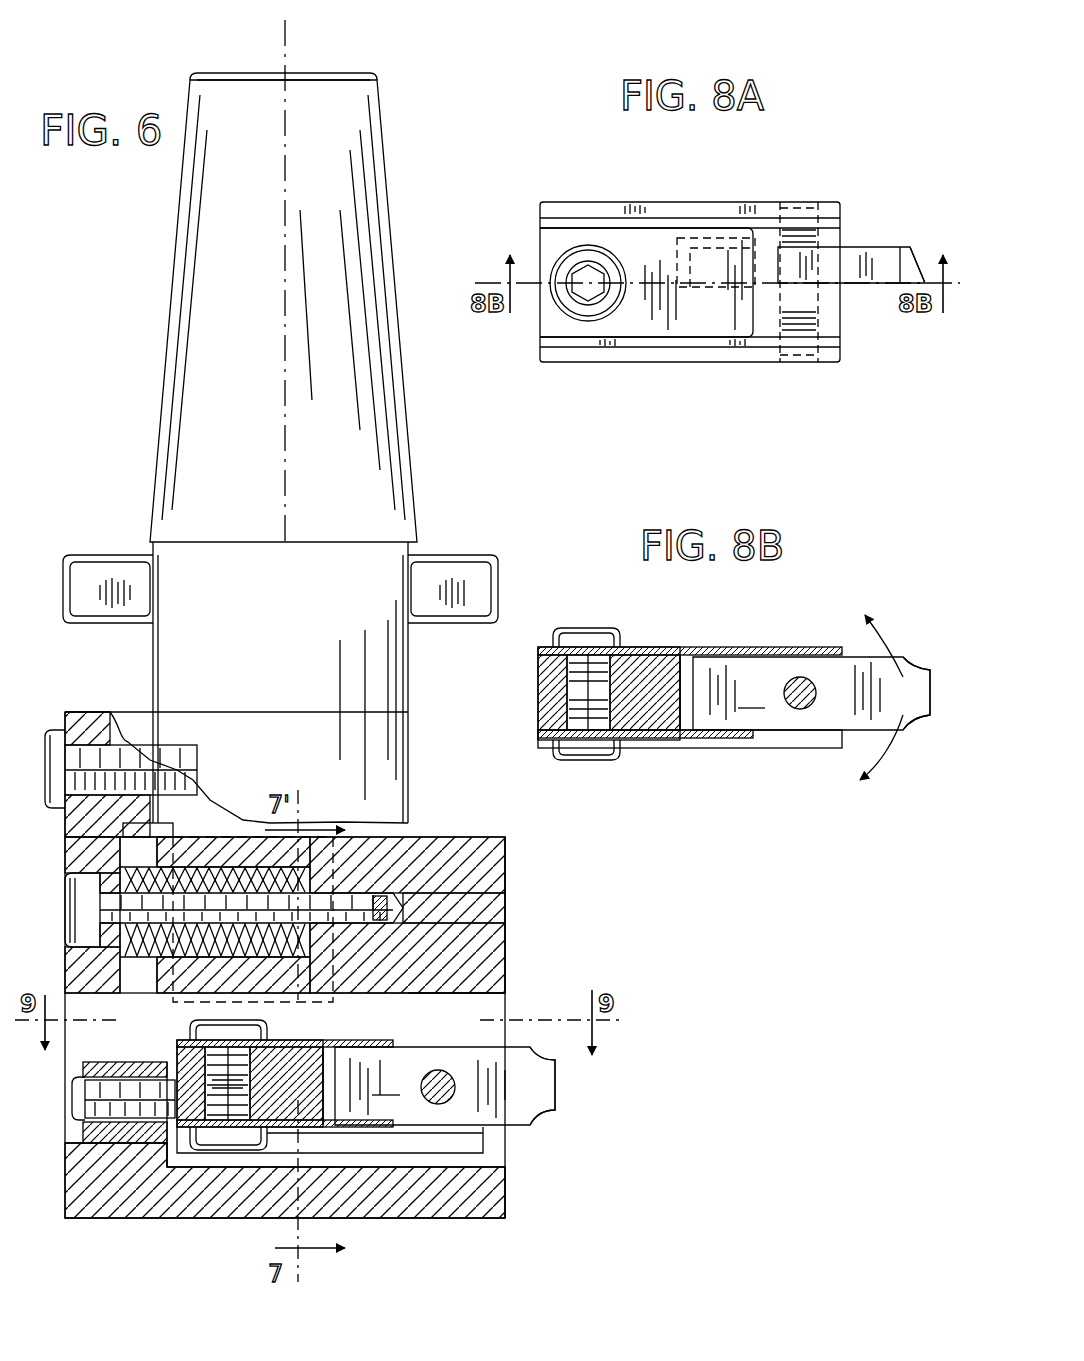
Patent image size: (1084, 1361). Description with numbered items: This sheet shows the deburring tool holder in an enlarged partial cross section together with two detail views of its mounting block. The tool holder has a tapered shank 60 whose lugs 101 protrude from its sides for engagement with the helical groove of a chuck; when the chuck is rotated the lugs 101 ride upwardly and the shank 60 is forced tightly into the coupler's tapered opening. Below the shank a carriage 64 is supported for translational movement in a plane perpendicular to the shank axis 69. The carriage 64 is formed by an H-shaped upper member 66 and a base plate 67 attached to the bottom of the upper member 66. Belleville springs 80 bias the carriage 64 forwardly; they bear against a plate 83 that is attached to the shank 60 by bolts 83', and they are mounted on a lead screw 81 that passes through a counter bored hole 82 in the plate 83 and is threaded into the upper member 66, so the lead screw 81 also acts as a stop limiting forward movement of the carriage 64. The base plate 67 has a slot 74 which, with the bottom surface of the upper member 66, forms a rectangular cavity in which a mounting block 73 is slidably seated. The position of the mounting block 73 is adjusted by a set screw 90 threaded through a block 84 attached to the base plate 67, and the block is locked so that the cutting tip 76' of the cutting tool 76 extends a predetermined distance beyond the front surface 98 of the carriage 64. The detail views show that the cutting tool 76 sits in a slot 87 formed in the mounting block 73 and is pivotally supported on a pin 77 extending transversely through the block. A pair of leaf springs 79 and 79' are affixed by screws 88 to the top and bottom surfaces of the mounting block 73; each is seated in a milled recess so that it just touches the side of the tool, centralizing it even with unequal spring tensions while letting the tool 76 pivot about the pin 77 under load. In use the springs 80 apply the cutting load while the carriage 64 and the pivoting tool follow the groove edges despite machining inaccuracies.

In FIG. 6, the tapered shank 60 is at (375, 235).
In FIG. 6, the carriage 64 is at (532, 968).
In FIG. 6, the upper member 66 is at (470, 895).
In FIG. 6, the base plate 67 is at (500, 1205).
In FIG. 6, the shank axis 69 is at (287, 58).
In FIG. 6, the mounting block 73 is at (300, 1065).
In FIG. 8A, the mounting block 73 is at (828, 322).
In FIG. 8B, the mounting block 73 is at (645, 715).
In FIG. 6, the slot 74 is at (460, 1010).
In FIG. 6, the cutting tool 76 is at (439, 1086).
In FIG. 8A, the cutting tool 76 is at (851, 241).
In FIG. 8B, the cutting tool 76 is at (805, 693).
In FIG. 6, the cutting tip 76' is at (563, 1105).
In FIG. 8A, the cutting tip 76' is at (923, 241).
In FIG. 8B, the cutting tip 76' is at (897, 690).
In FIG. 6, the pin 77 is at (436, 1070).
In FIG. 8A, the pin 77 is at (800, 362).
In FIG. 8B, the pin 77 is at (800, 677).
In FIG. 6, the leaf spring 79 is at (301, 1058).
In FIG. 8A, the leaf spring 79 is at (646, 253).
In FIG. 8B, the leaf spring 79 is at (690, 627).
In FIG. 6, the leaf spring 79' is at (330, 1168).
In FIG. 8B, the leaf spring 79' is at (690, 762).
In FIG. 6, the Belleville springs 80 is at (230, 867).
In FIG. 6, the lead screw 81 is at (285, 908).
In FIG. 6, the counter bored hole 82 is at (70, 940).
In FIG. 6, the plate 83 is at (216, 789).
In FIG. 6, the bolts 83' is at (121, 739).
In FIG. 6, the block 84 is at (100, 1135).
In FIG. 8A, the slot 87 is at (772, 248).
In FIG. 6, the screws 88 is at (205, 1035).
In FIG. 8A, the screws 88 is at (595, 248).
In FIG. 8B, the screws 88 is at (590, 636).
In FIG. 6, the set screw 90 is at (115, 1098).
In FIG. 6, the front surface 98 is at (505, 932).
In FIG. 6, the lugs 101 is at (98, 580).